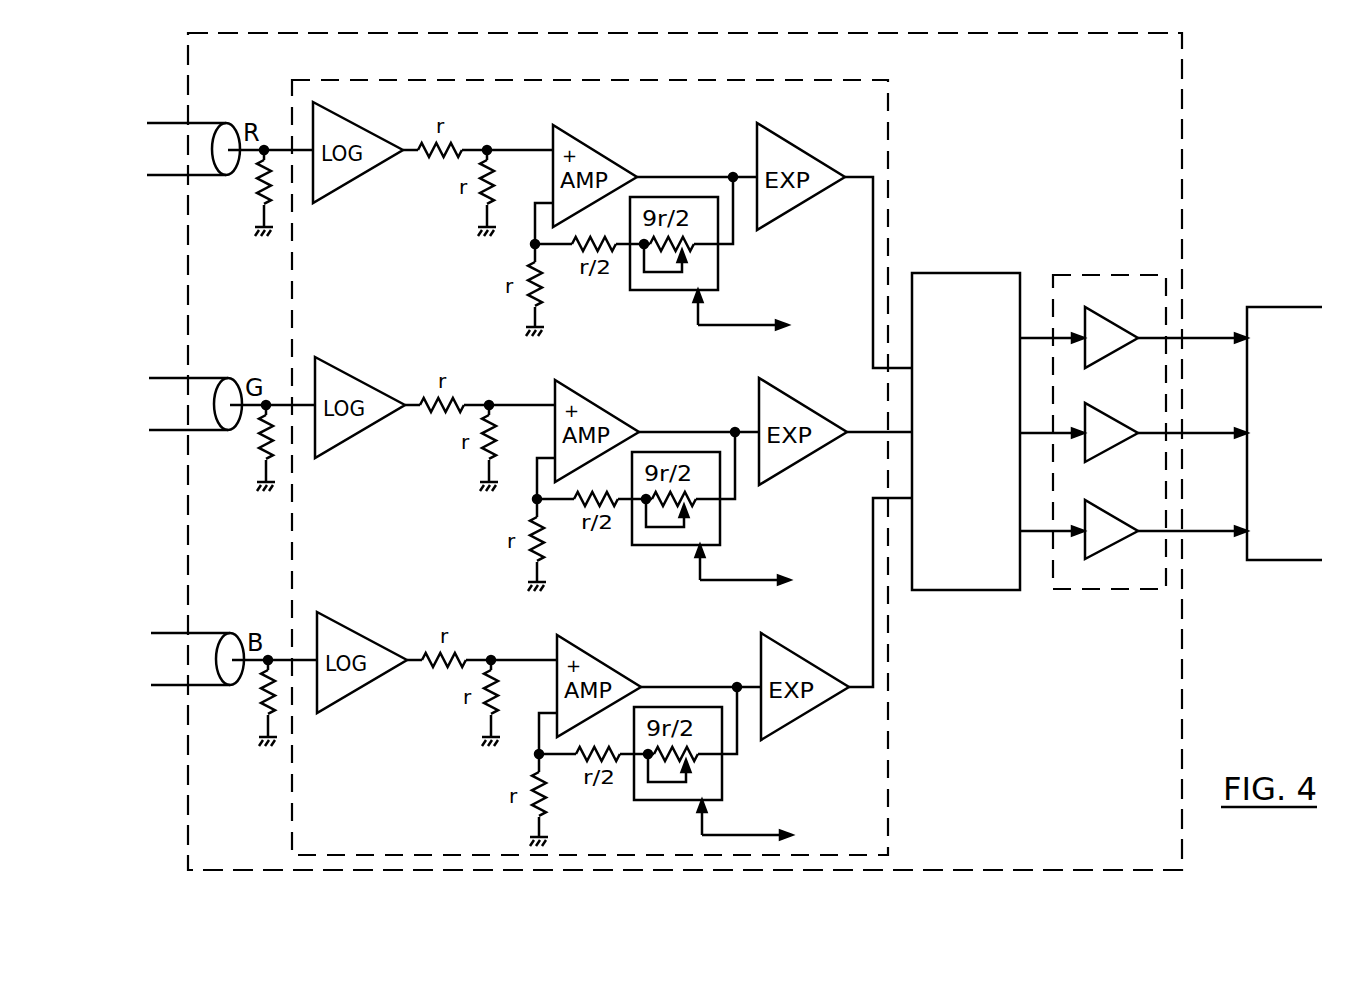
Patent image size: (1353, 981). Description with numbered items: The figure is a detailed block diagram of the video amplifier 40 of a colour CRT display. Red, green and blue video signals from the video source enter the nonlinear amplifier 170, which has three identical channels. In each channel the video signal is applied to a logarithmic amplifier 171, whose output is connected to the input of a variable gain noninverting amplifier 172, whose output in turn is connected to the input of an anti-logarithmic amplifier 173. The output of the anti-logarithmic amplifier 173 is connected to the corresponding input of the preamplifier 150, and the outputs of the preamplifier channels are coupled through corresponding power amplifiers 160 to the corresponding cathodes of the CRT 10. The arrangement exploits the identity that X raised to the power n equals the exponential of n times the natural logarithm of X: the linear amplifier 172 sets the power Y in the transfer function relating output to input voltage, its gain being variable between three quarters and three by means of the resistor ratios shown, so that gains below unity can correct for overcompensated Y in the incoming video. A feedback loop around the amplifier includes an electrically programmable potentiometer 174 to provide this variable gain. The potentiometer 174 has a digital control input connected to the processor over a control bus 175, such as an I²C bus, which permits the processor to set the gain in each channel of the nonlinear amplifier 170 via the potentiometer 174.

The CRT 10 is at (1315, 450).
The video amplifier 40 is at (1120, 836).
The preamplifier 150 is at (980, 450).
The power amplifier 160 is at (1132, 274).
The nonlinear amplifier 170 is at (393, 836).
The logarithmic amplifier 171 is at (357, 132).
The variable gain noninverting amplifier 172 is at (577, 133).
The anti-logarithmic amplifier 173 is at (778, 133).
The electrically programmable potentiometer 174 is at (718, 268).
The control bus 175 is at (698, 313).